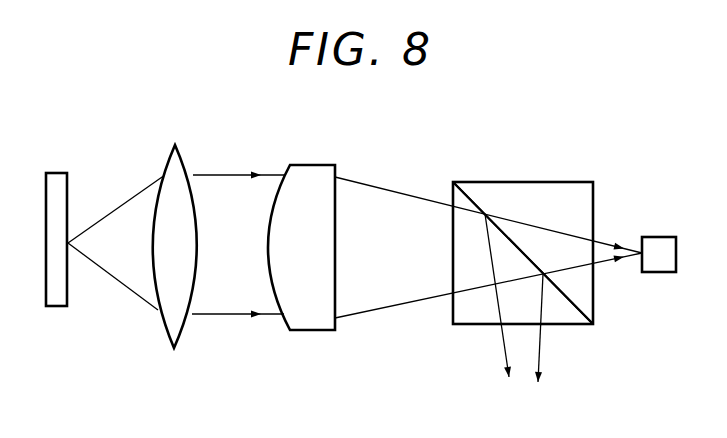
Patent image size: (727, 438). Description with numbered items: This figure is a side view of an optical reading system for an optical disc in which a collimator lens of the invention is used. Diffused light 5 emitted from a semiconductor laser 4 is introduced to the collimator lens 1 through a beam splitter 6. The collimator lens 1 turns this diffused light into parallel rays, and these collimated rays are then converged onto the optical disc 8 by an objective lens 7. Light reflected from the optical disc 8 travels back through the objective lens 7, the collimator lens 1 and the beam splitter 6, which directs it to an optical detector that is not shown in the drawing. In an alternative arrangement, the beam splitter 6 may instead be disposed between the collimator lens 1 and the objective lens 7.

The optical disc 8 is at (59, 180).
The objective lens 7 is at (183, 165).
The collimator lens 1 is at (320, 170).
The beam splitter 6 is at (505, 182).
The diffused light 5 is at (563, 233).
The semiconductor laser 4 is at (658, 237).